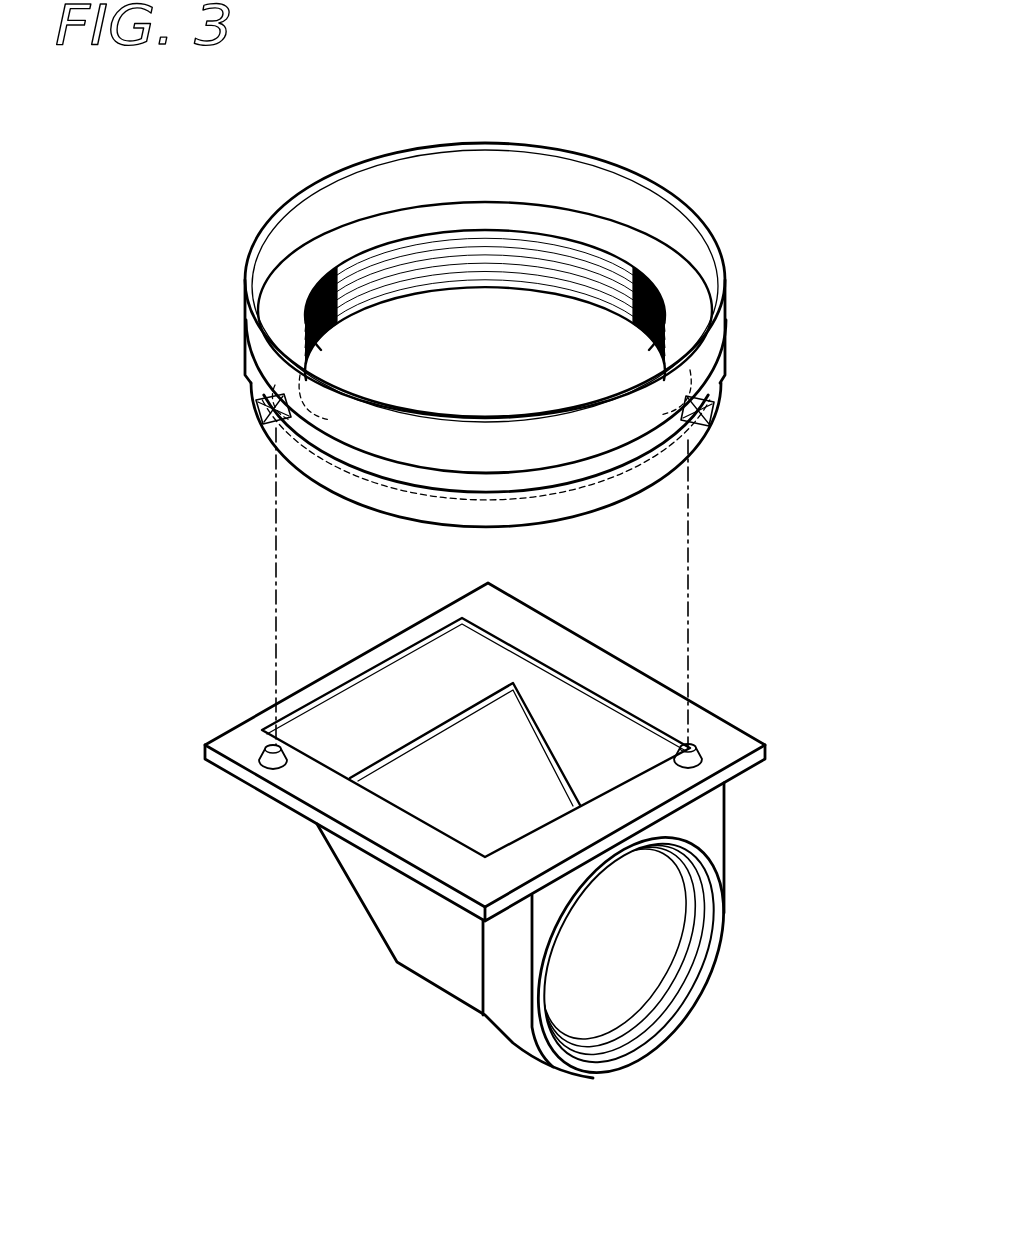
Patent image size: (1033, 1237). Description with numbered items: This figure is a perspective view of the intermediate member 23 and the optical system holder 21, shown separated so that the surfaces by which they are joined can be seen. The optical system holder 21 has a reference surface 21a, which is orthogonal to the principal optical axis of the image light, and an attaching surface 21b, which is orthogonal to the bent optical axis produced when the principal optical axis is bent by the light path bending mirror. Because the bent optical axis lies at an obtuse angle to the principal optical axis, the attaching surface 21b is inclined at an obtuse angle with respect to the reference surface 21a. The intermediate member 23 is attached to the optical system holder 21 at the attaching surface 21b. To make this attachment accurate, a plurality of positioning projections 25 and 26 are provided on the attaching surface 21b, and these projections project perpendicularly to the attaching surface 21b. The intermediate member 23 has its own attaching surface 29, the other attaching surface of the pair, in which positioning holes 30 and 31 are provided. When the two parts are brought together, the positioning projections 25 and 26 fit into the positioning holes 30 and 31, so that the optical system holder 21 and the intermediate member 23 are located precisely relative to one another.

The optical system holder 21 is at (539, 843).
The reference surface 21a is at (708, 824).
The attaching surface 21b is at (240, 743).
The intermediate member 23 is at (732, 257).
The positioning projection 25 is at (266, 762).
The positioning projection 26 is at (697, 750).
The attaching surface 29 is at (372, 495).
The positioning hole 30 is at (250, 412).
The positioning hole 31 is at (716, 418).